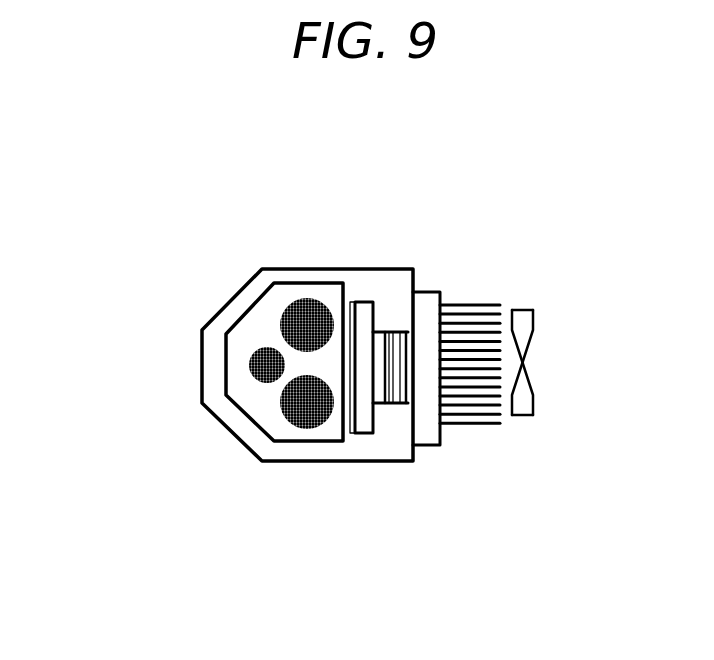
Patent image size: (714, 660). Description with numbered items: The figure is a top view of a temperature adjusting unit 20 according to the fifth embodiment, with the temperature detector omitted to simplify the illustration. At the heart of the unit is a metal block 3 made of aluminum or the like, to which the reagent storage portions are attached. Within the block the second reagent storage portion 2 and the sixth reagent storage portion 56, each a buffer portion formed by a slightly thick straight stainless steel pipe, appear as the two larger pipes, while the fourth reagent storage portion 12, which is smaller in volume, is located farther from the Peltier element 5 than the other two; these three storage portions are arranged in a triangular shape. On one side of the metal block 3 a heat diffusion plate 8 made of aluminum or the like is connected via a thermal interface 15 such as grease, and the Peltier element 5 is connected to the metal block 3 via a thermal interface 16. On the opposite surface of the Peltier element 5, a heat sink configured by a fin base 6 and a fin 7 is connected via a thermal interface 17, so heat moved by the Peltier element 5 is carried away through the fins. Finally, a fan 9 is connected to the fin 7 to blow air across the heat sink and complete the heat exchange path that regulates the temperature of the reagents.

The temperature adjusting unit 20 is at (61, 101).
The sixth reagent storage portion 56 is at (307, 324).
The metal block 3 is at (221, 362).
The second reagent storage portion 2 is at (254, 419).
The fourth reagent storage portion 12 is at (227, 306).
The thermal interface 15 is at (372, 290).
The heat diffusion plate 8 is at (346, 441).
The thermal interface 16 is at (375, 455).
The Peltier element 5 is at (404, 450).
The thermal interface 17 is at (402, 296).
The fin base 6 is at (475, 406).
The fin 7 is at (497, 333).
The fan 9 is at (554, 362).